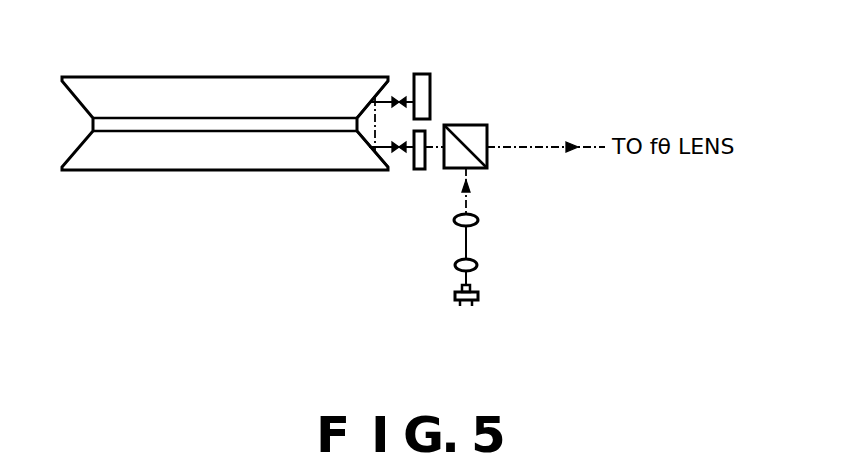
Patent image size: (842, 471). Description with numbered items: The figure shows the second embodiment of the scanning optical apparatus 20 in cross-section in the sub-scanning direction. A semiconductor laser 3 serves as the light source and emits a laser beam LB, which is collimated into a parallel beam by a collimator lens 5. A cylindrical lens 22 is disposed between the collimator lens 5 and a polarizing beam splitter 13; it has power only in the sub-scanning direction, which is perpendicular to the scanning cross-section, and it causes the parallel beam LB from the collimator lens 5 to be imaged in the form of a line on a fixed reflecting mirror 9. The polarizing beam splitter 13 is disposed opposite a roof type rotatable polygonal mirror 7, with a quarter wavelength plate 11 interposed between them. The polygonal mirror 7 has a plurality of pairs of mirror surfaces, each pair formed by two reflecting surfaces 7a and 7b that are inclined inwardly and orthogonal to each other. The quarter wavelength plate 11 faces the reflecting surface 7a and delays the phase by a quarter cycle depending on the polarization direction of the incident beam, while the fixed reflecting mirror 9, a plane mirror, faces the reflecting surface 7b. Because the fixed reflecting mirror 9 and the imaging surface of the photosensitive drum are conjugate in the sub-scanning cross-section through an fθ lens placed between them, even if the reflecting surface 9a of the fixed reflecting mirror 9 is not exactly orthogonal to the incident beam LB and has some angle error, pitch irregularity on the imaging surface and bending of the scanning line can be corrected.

The roof type rotatable polygonal mirror 7 is at (190, 170).
The reflecting surface 7a is at (368, 106).
The reflecting surface 7b is at (366, 150).
The fixed reflecting mirror 9 is at (428, 73).
The reflecting surface of the fixed reflecting mirror 9a is at (411, 82).
The quarter wavelength plate 11 is at (418, 170).
The polarizing beam splitter 13 is at (470, 124).
The cylindrical lens 22 is at (479, 216).
The laser beam LB is at (467, 241).
The collimator lens 5 is at (478, 265).
The semiconductor laser 3 is at (479, 296).
The scanning optical apparatus 20 is at (383, 214).